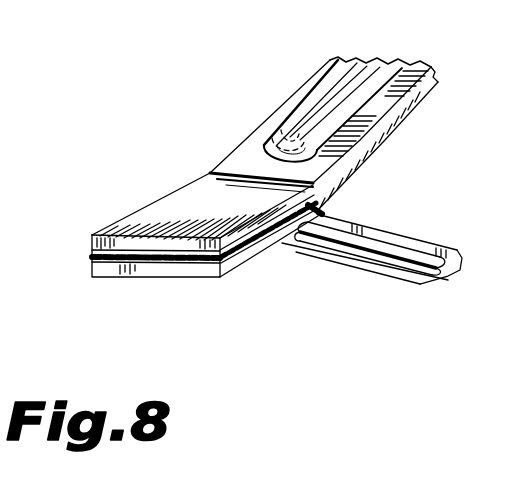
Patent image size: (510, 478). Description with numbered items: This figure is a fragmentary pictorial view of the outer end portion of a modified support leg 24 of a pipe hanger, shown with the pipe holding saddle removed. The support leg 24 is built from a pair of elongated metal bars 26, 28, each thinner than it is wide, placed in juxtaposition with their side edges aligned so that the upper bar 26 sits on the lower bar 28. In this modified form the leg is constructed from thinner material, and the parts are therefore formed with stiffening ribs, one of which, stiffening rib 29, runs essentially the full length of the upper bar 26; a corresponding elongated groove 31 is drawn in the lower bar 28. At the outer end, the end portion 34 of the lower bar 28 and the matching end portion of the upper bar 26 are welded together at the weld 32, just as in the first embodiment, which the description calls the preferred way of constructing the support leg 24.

The support leg 24 is at (208, 122).
The elongated metal bar 26 is at (297, 98).
The elongated metal bar 28 is at (330, 266).
The stiffening rib 29 is at (333, 117).
The groove in lower strip 31 is at (380, 262).
The weld 32 is at (256, 250).
The end portion 34 is at (157, 218).